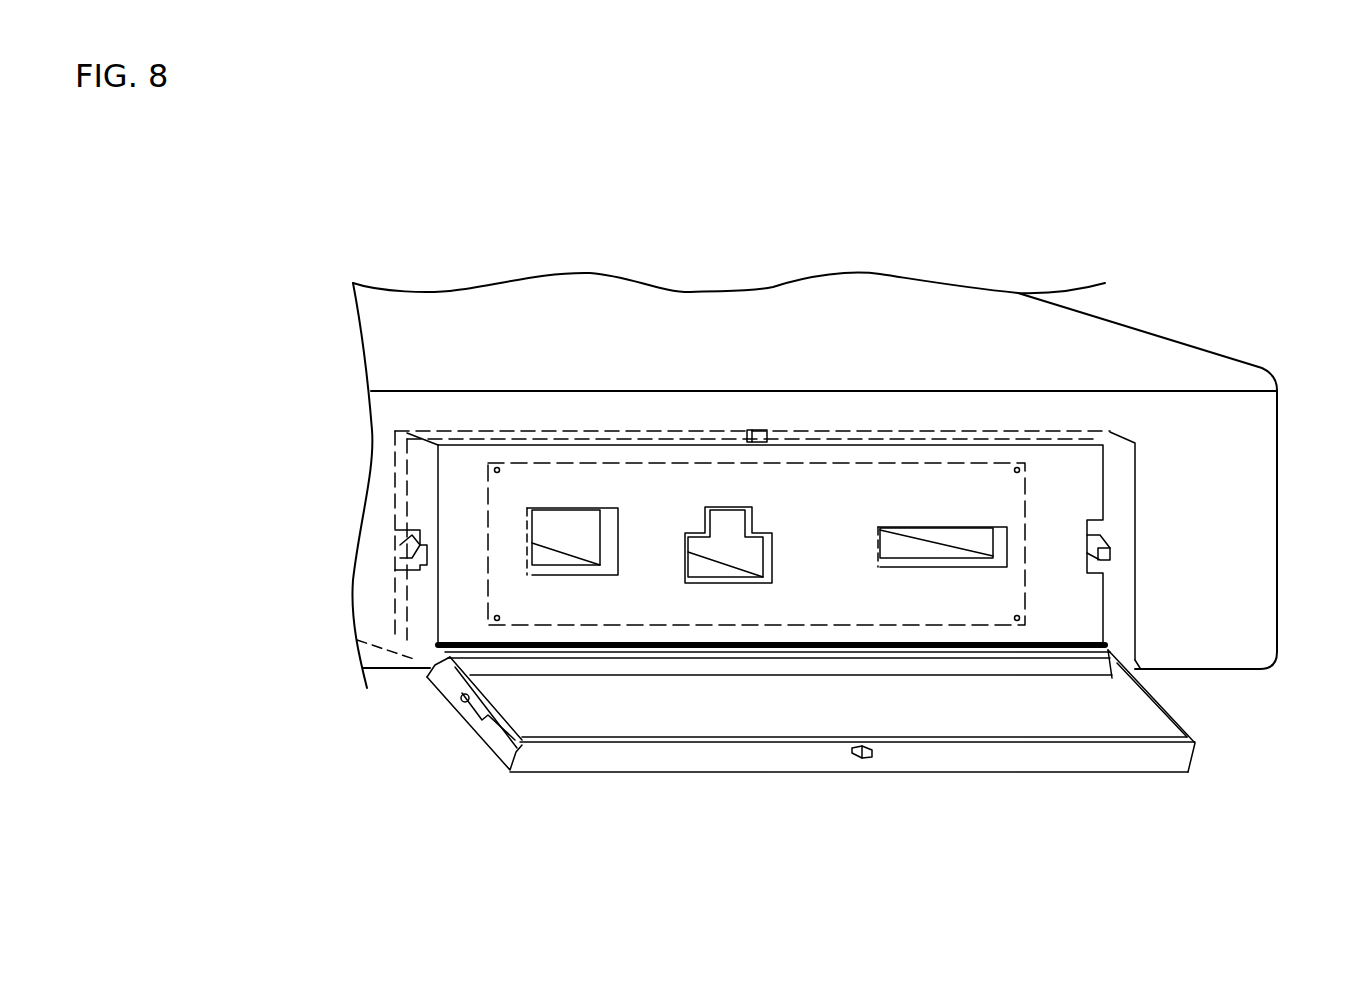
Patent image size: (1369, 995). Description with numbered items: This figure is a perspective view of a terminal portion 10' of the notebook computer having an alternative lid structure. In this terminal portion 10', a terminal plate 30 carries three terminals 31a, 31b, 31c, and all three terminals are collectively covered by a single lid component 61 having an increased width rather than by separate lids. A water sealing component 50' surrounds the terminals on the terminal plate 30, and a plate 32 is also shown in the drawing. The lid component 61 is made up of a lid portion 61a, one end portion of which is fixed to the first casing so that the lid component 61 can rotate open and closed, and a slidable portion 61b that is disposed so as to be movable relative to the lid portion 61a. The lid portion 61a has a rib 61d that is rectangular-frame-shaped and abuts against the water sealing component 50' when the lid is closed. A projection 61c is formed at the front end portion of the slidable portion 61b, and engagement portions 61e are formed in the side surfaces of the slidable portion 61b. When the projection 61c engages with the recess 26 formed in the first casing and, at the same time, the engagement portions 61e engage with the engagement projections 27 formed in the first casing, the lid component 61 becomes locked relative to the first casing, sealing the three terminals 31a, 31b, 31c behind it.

The terminal portion 10' is at (816, 431).
The water sealing component 50' is at (770, 420).
The terminal plate 30 is at (527, 483).
The cover plate 32 is at (845, 553).
The terminal 31a is at (567, 530).
The terminal 31b is at (725, 547).
The terminal 31c is at (933, 540).
The recess 26 is at (760, 428).
The engagement projection 27 is at (395, 557).
The lid component 61 is at (799, 764).
The lid portion 61a is at (655, 702).
The slidable portion 61b is at (742, 757).
The projection 61c is at (872, 755).
The rib 61d is at (503, 693).
The engagement portion 61e is at (468, 693).